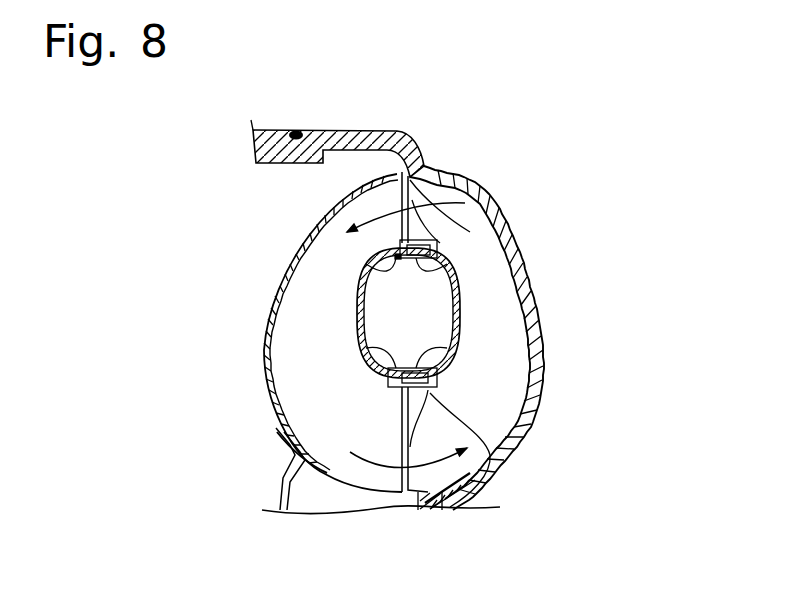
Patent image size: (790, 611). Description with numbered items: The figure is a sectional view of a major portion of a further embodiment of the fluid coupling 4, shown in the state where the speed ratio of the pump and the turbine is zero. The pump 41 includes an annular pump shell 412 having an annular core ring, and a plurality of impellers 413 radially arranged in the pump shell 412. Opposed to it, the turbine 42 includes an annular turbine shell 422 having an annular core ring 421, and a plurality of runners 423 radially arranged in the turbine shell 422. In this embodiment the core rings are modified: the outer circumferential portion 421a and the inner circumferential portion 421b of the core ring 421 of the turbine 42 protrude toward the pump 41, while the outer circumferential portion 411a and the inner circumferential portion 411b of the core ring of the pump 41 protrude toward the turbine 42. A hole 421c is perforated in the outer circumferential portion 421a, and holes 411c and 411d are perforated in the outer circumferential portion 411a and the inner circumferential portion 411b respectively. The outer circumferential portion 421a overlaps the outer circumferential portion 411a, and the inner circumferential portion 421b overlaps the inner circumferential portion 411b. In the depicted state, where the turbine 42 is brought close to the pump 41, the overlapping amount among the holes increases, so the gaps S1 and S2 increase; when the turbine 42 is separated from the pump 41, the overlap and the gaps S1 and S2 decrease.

The fluid coupling 4 is at (467, 138).
The pump 41 is at (542, 305).
The pump shell 412 is at (540, 338).
The impellers 413 is at (490, 422).
The turbine 42 is at (297, 247).
The core ring 421 is at (358, 290).
The outer circumferential portion 421a is at (413, 240).
The inner circumferential portion 421b is at (405, 420).
The hole 421c is at (437, 243).
The turbine shell 422 is at (266, 323).
The runners 423 is at (308, 395).
The outer circumferential portion 411a is at (368, 263).
The inner circumferential portion 411b is at (370, 350).
The hole 411c is at (450, 273).
The hole 411d is at (451, 366).
The gap S1 is at (412, 241).
The gap S2 is at (402, 408).